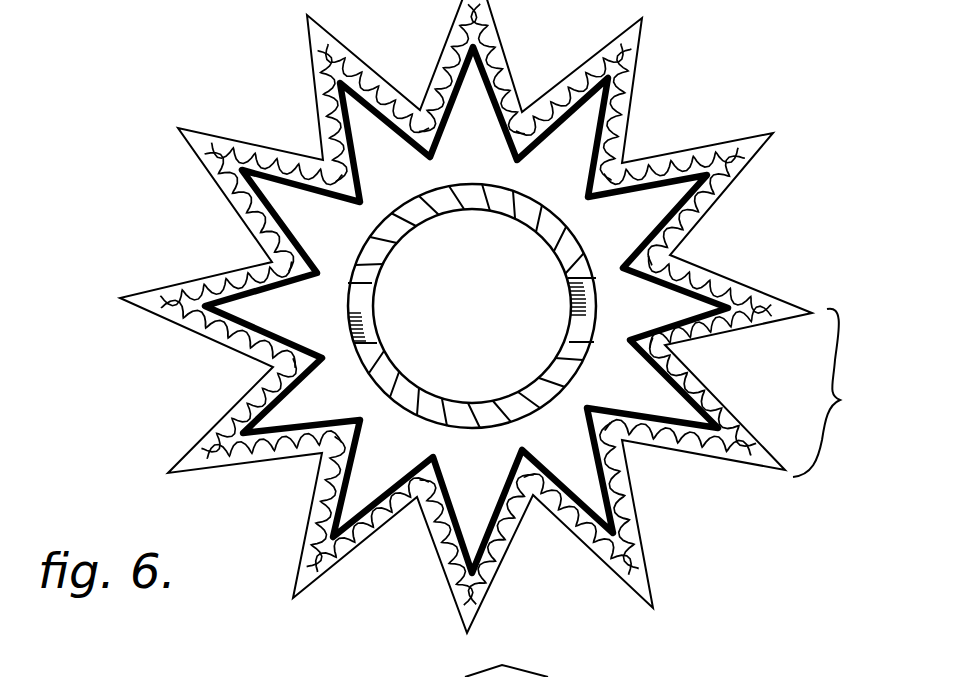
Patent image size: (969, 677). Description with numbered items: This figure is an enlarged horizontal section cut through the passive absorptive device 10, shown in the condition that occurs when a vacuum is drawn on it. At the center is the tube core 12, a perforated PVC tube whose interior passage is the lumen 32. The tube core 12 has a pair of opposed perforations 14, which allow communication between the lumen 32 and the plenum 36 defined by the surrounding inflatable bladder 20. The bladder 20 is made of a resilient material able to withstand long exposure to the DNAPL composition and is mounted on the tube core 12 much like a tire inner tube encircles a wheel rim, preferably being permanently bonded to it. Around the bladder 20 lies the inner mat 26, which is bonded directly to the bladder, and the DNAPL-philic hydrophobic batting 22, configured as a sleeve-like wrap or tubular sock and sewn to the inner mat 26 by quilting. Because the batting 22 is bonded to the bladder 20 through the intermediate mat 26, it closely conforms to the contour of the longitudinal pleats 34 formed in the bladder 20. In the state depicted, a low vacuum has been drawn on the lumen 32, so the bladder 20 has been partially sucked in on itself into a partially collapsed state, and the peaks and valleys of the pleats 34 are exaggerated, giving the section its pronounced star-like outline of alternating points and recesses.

The passive absorptive device 10 is at (103, 243).
The tube core 12 is at (458, 219).
The perforations 14 is at (364, 305).
The inflatable bladder 20 is at (282, 186).
The batting 22 is at (752, 134).
The inner mat 26 is at (638, 68).
The lumen 32 is at (483, 357).
The longitudinal pleats 34 is at (842, 393).
The plenum 36 is at (630, 387).